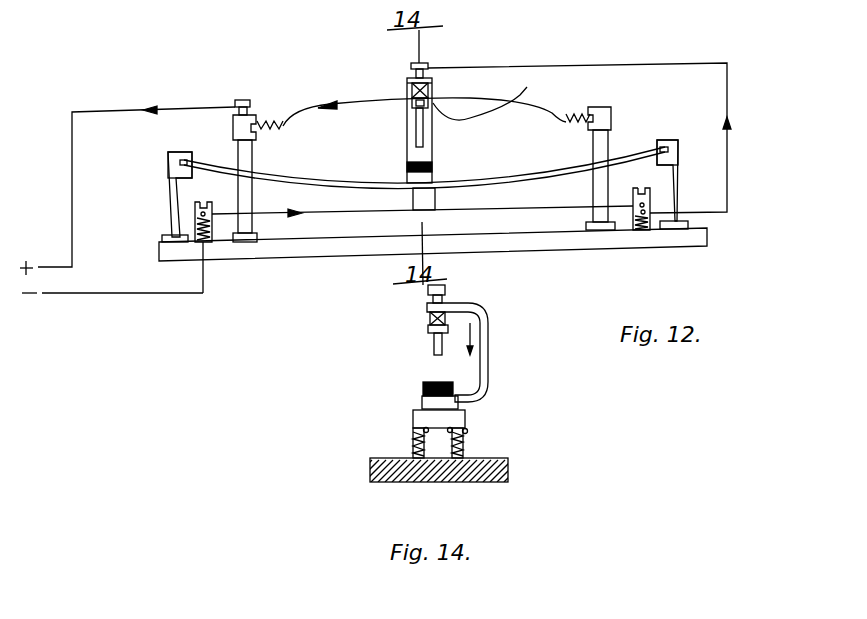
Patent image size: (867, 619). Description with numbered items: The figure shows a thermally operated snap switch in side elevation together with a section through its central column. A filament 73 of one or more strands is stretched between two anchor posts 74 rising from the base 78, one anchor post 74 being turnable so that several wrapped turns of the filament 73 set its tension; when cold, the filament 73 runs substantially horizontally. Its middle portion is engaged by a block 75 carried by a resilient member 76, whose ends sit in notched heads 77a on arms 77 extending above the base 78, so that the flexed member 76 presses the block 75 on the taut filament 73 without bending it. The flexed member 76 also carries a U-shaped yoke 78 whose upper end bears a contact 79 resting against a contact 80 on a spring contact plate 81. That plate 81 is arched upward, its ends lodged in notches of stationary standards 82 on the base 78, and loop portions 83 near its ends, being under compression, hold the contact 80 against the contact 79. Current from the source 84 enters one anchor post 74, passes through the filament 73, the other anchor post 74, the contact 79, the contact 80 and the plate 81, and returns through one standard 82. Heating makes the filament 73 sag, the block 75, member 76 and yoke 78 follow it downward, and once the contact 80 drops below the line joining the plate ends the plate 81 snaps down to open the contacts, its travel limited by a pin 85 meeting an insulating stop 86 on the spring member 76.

In FIG. 12, the filament 73 is at (567, 208).
In FIG. 14, the filament 73 is at (467, 432).
In FIG. 12, the anchor post 74 is at (208, 243).
In FIG. 14, the anchor post 74 is at (413, 443).
In FIG. 12, the block 75 is at (413, 200).
In FIG. 14, the block 75 is at (465, 422).
In FIG. 12, the resilient member 76 is at (338, 182).
In FIG. 14, the resilient member 76 is at (422, 405).
In FIG. 12, the arm 77 is at (173, 207).
In FIG. 12, the notched head 77a is at (177, 163).
In FIG. 12, the base 78 is at (322, 247).
In FIG. 14, the base 78 is at (488, 360).
In FIG. 12, the contact 79 is at (432, 86).
In FIG. 14, the contact 79 is at (430, 316).
In FIG. 12, the contact 80 is at (484, 98).
In FIG. 14, the contact 80 is at (428, 327).
In FIG. 12, the spring contact plate 81 is at (345, 100).
In FIG. 12, the standard 82 is at (233, 122).
In FIG. 12, the loop portion 83 is at (270, 118).
In FIG. 12, the source 84 is at (33, 278).
In FIG. 12, the pin 85 is at (427, 133).
In FIG. 12, the stop 86 is at (433, 165).
In FIG. 14, the stop 86 is at (423, 388).